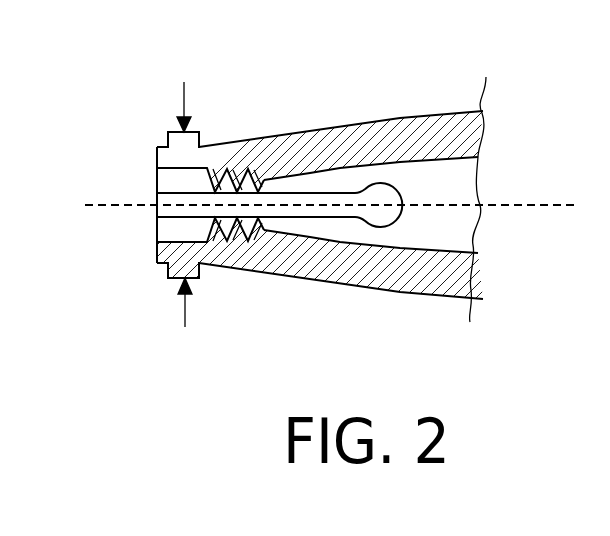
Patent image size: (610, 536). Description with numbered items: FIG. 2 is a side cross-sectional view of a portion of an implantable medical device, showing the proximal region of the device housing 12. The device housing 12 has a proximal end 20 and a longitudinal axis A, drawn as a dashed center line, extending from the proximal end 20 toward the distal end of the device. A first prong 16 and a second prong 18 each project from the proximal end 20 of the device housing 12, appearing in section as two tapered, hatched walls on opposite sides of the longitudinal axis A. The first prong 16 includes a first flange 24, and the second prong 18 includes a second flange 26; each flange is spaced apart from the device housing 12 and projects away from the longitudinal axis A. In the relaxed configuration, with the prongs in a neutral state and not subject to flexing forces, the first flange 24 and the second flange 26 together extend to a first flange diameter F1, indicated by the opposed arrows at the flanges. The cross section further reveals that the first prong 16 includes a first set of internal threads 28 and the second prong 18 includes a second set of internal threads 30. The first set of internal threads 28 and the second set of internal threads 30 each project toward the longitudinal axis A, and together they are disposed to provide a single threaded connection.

The device housing 12 is at (457, 307).
The first prong 16 is at (347, 118).
The second prong 18 is at (316, 288).
The proximal end 20 is at (473, 112).
The first flange 24 is at (168, 142).
The second flange 26 is at (168, 263).
The first set of internal threads 28 is at (205, 170).
The second set of internal threads 30 is at (205, 216).
The longitudinal axis A is at (522, 205).
The first flange diameter F1 is at (184, 110).